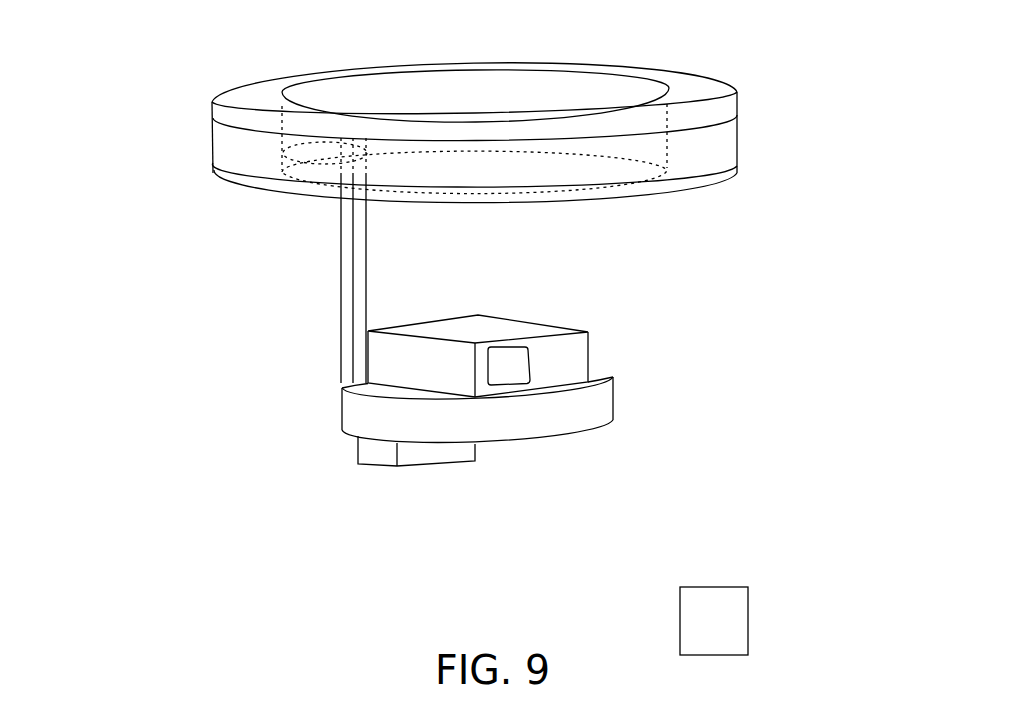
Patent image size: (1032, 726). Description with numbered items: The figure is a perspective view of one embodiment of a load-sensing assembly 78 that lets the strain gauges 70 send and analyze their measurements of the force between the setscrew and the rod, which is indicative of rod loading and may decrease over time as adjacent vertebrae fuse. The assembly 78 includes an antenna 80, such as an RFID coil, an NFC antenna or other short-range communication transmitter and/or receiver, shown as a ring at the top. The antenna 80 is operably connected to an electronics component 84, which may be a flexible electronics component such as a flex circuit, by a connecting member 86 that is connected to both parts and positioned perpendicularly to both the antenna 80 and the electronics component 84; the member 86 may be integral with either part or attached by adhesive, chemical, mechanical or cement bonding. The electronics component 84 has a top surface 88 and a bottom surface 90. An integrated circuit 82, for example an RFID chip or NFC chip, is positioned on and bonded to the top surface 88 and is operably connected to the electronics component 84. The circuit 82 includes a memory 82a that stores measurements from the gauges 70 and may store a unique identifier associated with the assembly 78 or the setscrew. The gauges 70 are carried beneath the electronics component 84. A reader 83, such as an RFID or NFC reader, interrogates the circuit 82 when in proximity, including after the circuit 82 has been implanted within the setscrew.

The load-sensing assembly 78 is at (746, 255).
The antenna 80 is at (260, 92).
The integrated circuit 82 is at (578, 347).
The memory 82a is at (508, 360).
The electronics component 84 is at (503, 423).
The connecting member 86 is at (341, 290).
The top surface 88 is at (613, 385).
The bottom surface 90 is at (578, 440).
The strain gauges 70 is at (418, 455).
The reader 83 is at (748, 625).